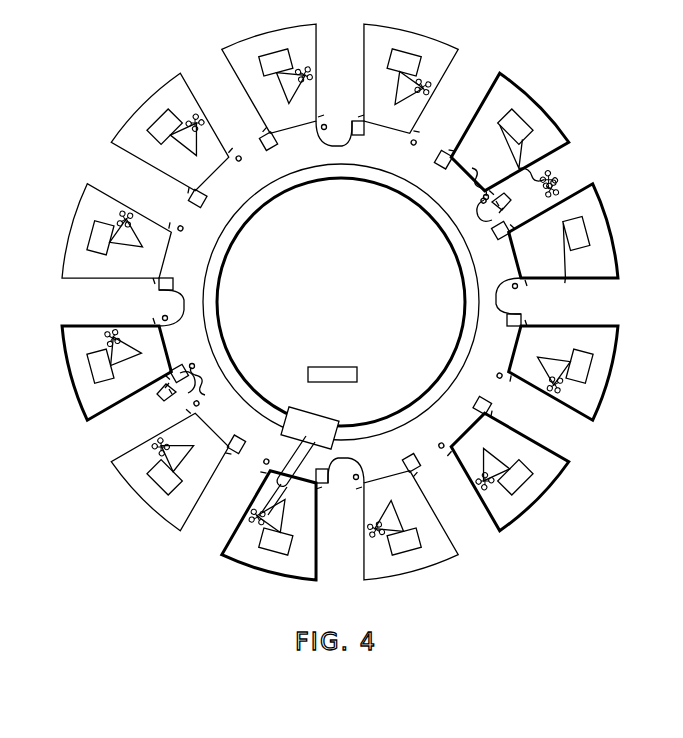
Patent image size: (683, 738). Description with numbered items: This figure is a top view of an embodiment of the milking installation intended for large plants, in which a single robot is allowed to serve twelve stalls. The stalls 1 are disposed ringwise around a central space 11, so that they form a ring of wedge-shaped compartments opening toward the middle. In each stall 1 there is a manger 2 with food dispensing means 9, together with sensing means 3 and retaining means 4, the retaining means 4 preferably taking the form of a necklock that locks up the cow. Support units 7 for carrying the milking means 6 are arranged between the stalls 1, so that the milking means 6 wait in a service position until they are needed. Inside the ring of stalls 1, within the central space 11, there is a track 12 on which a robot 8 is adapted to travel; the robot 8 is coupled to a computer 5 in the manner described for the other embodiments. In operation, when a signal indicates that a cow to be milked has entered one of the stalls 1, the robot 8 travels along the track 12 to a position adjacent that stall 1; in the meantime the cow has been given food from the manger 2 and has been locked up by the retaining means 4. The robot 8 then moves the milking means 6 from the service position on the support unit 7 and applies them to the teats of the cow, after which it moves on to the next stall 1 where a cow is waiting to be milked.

The stall 1 is at (216, 74).
The manger 2 is at (266, 140).
The sensing means 3 is at (478, 180).
The retaining means 4 is at (502, 196).
The computer 5 is at (336, 367).
The milking means 6 is at (194, 123).
The support unit 7 is at (519, 116).
The robot 8 is at (298, 414).
The food dispensing means 9 is at (364, 132).
The central space 11 is at (351, 306).
The track 12 is at (214, 294).